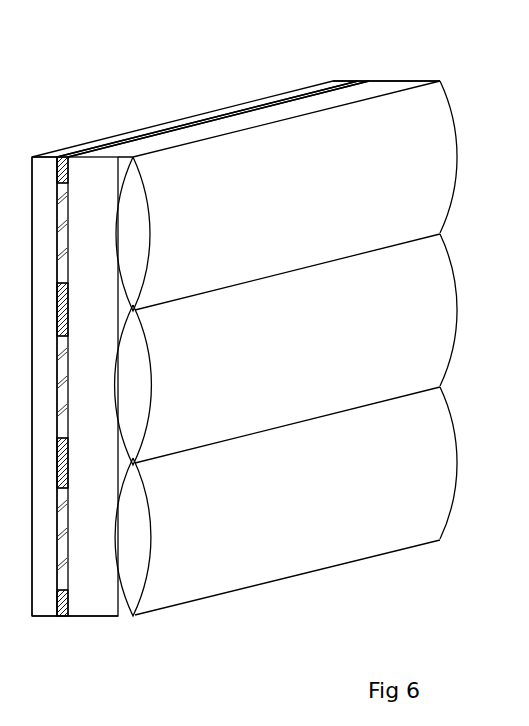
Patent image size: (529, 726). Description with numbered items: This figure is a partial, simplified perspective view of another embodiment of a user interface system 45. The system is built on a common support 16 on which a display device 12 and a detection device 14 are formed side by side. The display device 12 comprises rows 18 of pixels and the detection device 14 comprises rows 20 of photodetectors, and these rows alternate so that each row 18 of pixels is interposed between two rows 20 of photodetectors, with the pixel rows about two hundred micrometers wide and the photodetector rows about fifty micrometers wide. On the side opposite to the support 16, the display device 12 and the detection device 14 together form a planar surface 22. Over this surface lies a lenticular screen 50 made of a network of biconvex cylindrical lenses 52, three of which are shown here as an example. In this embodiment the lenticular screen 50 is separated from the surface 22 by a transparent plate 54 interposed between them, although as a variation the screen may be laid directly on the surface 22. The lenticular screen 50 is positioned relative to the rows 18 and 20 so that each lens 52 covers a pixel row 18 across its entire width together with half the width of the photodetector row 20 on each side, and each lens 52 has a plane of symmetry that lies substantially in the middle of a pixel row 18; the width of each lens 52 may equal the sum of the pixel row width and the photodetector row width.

The display device 12 is at (48, 512).
The detection device 14 is at (62, 620).
The support 16 is at (43, 154).
The rows of pixels 18 is at (62, 213).
The rows of photodetectors 20 is at (57, 170).
The planar surface 22 is at (68, 156).
The user interface system 45 is at (397, 78).
The lenticular screen 50 is at (240, 596).
The biconvex cylindrical lenses 52 is at (443, 143).
The transparent plate 54 is at (148, 139).